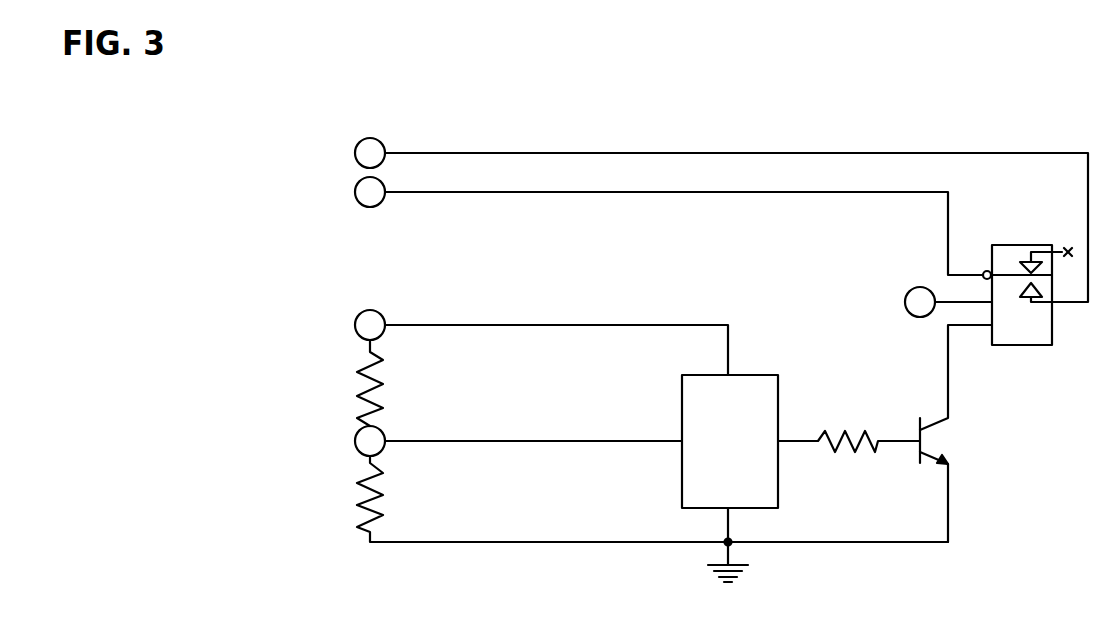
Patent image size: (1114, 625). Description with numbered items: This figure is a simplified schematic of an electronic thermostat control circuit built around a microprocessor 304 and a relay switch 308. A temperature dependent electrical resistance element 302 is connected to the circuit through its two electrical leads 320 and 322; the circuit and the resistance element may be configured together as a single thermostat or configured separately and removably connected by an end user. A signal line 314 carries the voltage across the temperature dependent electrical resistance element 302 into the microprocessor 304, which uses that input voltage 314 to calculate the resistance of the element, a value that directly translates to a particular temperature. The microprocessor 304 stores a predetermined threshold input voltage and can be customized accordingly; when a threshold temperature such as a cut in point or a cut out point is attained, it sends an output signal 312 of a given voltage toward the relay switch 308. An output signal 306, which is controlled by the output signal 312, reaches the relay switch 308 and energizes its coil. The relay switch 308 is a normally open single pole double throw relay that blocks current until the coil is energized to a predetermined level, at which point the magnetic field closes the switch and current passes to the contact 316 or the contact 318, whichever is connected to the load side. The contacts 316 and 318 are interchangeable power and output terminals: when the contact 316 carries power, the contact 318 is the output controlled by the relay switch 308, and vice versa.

The temperature dependent electrical resistance element 302 is at (372, 372).
The microprocessor 304 is at (682, 402).
The output signal 306 is at (948, 370).
The relay switch 308 is at (1030, 245).
The output signal 312 is at (800, 443).
The signal line 314 is at (530, 442).
The contact 316 is at (364, 140).
The contact 318 is at (362, 206).
The electrical lead 320 is at (365, 350).
The electrical lead 322 is at (365, 418).